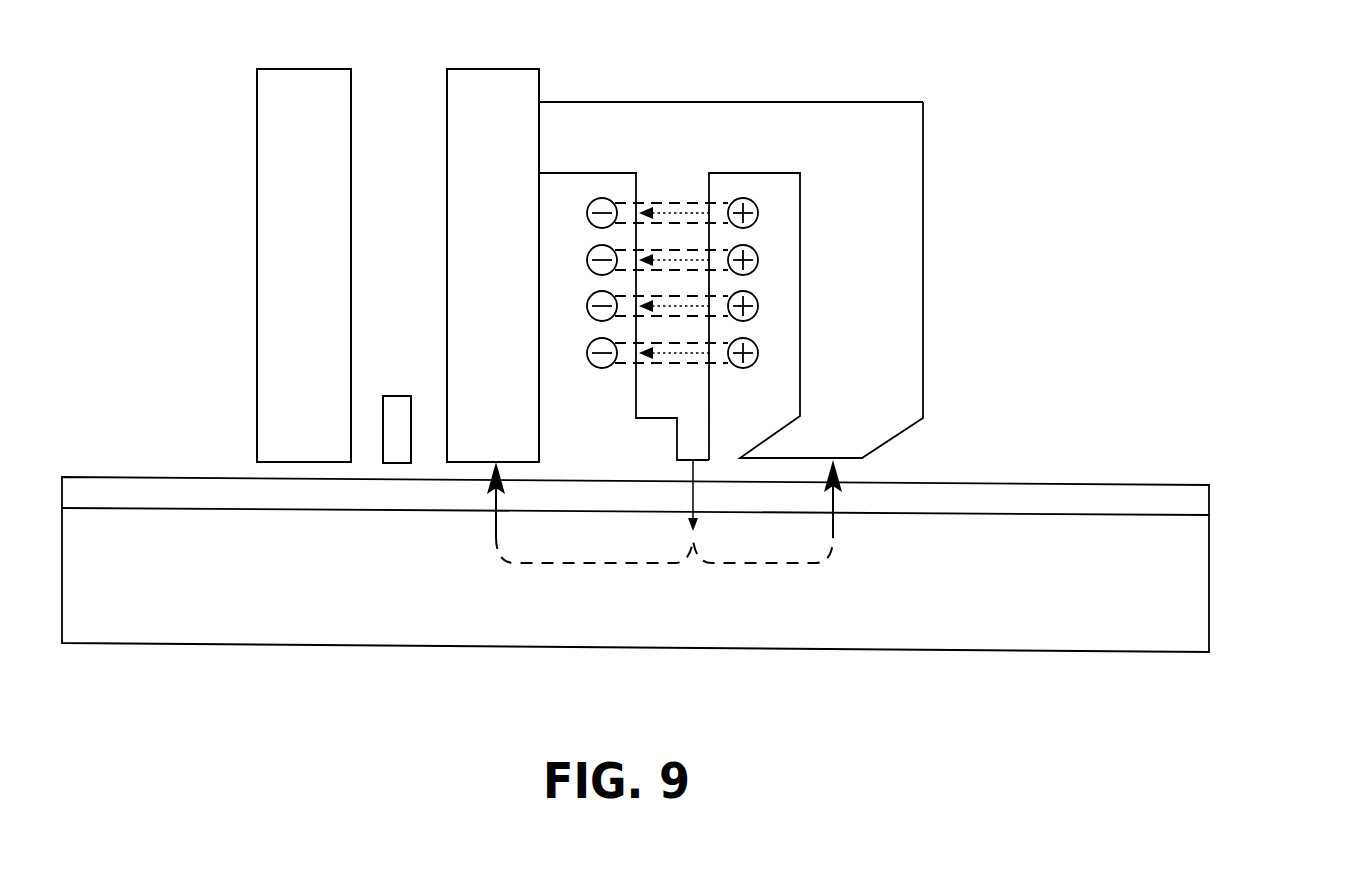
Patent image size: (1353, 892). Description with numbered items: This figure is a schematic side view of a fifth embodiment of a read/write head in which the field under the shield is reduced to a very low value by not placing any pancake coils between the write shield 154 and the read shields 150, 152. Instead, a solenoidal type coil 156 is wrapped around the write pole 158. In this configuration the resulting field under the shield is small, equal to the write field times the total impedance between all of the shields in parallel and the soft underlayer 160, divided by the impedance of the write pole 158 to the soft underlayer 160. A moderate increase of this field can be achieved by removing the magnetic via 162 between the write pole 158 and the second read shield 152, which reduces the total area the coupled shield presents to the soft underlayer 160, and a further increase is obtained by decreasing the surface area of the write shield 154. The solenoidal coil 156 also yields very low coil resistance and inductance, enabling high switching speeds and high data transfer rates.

The read shield 150 is at (288, 68).
The second read shield 152 is at (478, 68).
The write shield 154 is at (893, 237).
The solenoidal type coil 156 is at (740, 365).
The write pole 158 is at (690, 436).
The soft underlayer 160 is at (1183, 585).
The magnetic via 162 is at (590, 135).